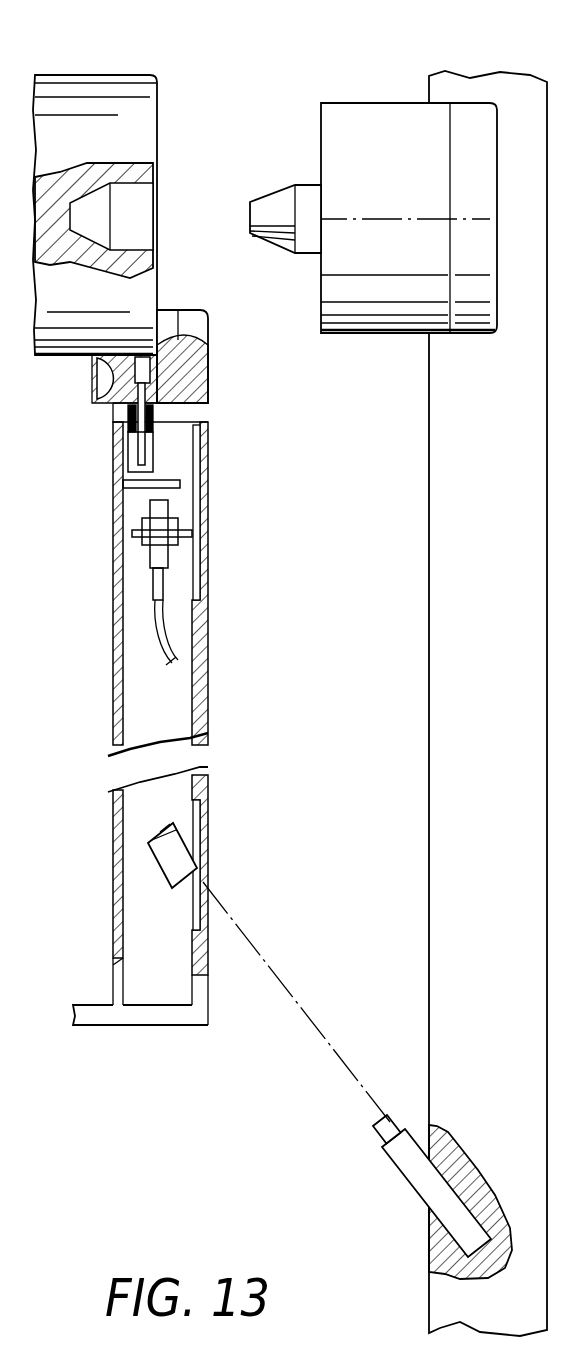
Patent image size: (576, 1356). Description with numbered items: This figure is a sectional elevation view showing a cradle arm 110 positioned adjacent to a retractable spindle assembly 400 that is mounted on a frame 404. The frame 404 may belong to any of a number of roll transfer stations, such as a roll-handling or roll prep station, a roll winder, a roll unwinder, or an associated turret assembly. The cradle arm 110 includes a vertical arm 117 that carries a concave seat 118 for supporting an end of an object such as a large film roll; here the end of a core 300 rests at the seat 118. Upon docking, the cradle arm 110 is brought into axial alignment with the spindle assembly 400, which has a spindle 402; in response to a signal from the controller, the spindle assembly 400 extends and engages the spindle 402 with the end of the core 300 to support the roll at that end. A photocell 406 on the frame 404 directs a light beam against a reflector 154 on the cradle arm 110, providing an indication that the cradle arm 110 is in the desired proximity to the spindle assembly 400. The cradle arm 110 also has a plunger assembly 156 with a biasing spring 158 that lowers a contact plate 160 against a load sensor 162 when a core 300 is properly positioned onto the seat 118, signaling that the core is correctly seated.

The cradle arm 110 is at (225, 680).
The vertical arm 117 is at (207, 578).
The concave seat 118 is at (100, 388).
The reflector 154 is at (183, 840).
The plunger assembly 156 is at (115, 404).
The biasing spring 158 is at (115, 441).
The contact plate 160 is at (125, 492).
The load sensor 162 is at (140, 520).
The core 300 is at (133, 105).
The retractable spindle assembly 400 is at (346, 335).
The spindle 402 is at (270, 206).
The frame 404 is at (429, 440).
The photocell 406 is at (400, 1166).